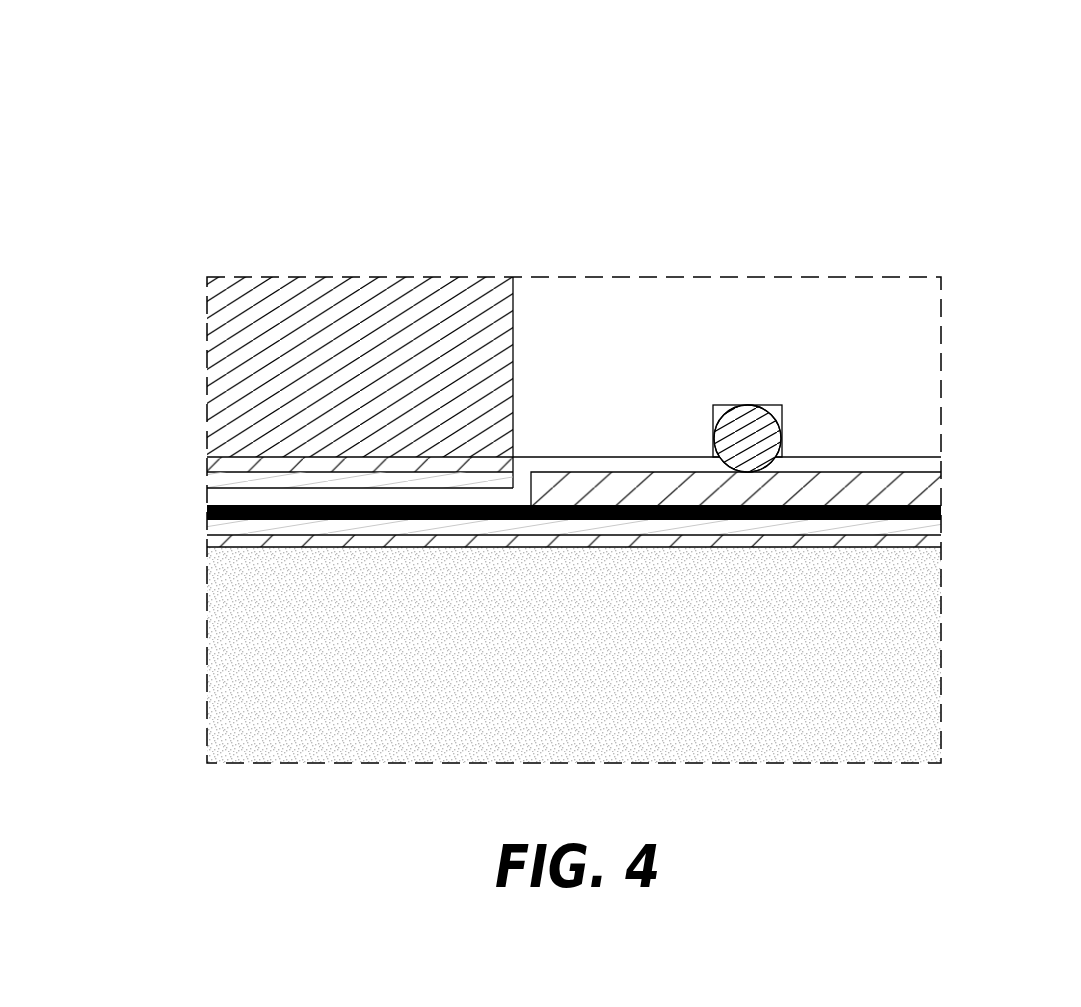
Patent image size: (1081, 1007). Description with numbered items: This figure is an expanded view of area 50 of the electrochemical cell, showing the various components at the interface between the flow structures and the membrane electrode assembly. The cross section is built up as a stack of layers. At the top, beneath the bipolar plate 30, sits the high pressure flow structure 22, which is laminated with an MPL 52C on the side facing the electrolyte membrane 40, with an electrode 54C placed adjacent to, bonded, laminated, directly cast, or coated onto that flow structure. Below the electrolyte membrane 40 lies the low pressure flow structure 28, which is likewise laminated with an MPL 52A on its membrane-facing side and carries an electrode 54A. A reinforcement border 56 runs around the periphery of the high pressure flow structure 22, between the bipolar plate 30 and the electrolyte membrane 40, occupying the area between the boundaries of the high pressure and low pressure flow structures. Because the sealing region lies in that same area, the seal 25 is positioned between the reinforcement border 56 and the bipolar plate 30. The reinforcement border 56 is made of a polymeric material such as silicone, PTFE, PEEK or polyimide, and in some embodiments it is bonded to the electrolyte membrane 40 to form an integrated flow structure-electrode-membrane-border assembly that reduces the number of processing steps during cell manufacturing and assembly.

The area 50 is at (582, 129).
The high pressure flow structure 22 is at (313, 297).
The bipolar plate 30 is at (675, 302).
The seal 25 is at (758, 433).
The reinforcement border 56 is at (900, 495).
The electrolyte membrane 40 is at (941, 527).
The low pressure flow structure 28 is at (907, 693).
The MPL 52C is at (227, 467).
The electrode 54C is at (230, 483).
The MPL 52A is at (213, 542).
The electrode 54A is at (295, 525).